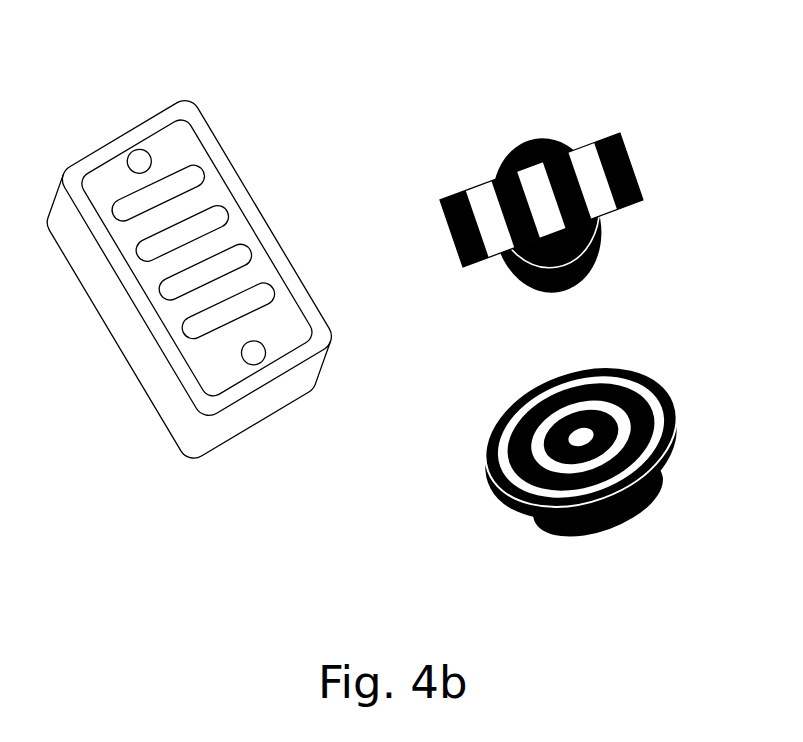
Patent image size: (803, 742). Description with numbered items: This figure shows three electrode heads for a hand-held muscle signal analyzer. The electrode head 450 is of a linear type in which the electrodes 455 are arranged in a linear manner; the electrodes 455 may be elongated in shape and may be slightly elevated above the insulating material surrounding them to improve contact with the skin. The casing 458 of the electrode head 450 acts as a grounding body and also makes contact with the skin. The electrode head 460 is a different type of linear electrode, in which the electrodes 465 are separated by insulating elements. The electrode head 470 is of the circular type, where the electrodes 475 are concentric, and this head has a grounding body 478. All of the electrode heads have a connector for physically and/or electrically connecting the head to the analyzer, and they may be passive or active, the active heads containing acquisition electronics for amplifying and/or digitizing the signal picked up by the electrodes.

The electrode head 450 is at (168, 97).
The electrodes 455 is at (223, 213).
The casing 458 is at (303, 297).
The electrode head 460 is at (573, 130).
The electrodes 465 is at (598, 215).
The electrode head 470 is at (640, 363).
The grounding body 478 is at (663, 398).
The electrodes 475 is at (588, 438).